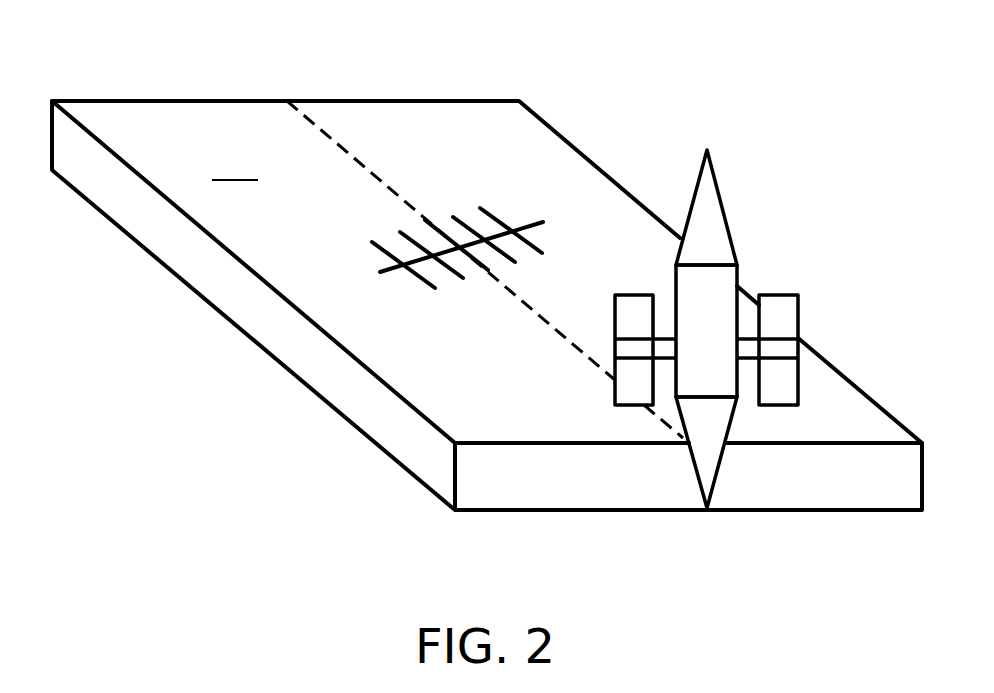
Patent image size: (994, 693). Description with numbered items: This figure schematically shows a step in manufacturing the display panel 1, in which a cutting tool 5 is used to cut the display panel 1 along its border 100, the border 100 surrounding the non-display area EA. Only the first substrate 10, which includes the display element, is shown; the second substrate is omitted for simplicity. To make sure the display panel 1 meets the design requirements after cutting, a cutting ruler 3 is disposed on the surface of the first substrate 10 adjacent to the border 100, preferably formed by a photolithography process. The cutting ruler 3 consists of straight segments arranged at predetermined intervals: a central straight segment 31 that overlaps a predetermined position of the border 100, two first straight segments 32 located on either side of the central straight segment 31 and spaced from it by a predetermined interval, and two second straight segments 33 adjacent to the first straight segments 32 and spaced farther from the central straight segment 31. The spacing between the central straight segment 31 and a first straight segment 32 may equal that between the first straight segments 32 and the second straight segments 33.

The display panel 1 is at (552, 107).
The first substrate 10 is at (848, 405).
The border 100 is at (330, 135).
The cutting ruler 3 is at (503, 212).
The central straight segment 31 is at (477, 268).
The first straight segment 32 is at (450, 275).
The second straight segment 33 is at (417, 278).
The cutting tool 5 is at (727, 182).